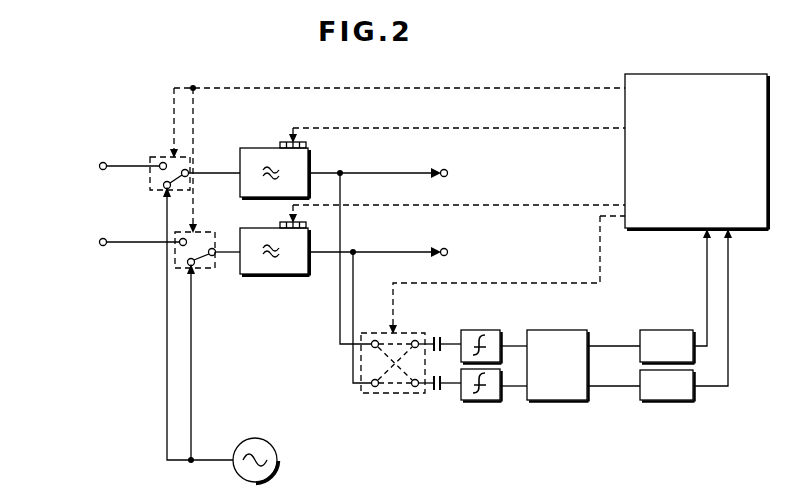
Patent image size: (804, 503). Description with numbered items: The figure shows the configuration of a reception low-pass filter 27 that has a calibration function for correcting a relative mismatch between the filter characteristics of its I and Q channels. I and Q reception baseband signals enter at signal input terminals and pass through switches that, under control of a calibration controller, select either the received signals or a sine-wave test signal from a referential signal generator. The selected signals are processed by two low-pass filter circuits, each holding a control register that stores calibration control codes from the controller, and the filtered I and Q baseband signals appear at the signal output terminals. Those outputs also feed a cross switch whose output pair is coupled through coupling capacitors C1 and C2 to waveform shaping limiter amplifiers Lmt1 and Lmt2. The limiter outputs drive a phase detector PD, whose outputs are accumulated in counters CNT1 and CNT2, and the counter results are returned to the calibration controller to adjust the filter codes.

The reception low-pass filter 27 is at (224, 65).
The coupling capacitor C1 is at (435, 333).
The coupling capacitor C2 is at (439, 395).
The waveform shaping limiter amplifier Lmt1 is at (508, 331).
The waveform shaping limiter amplifier Lmt2 is at (490, 402).
The phase detector PD is at (583, 366).
The counter CNT1 is at (675, 296).
The counter CNT2 is at (686, 315).